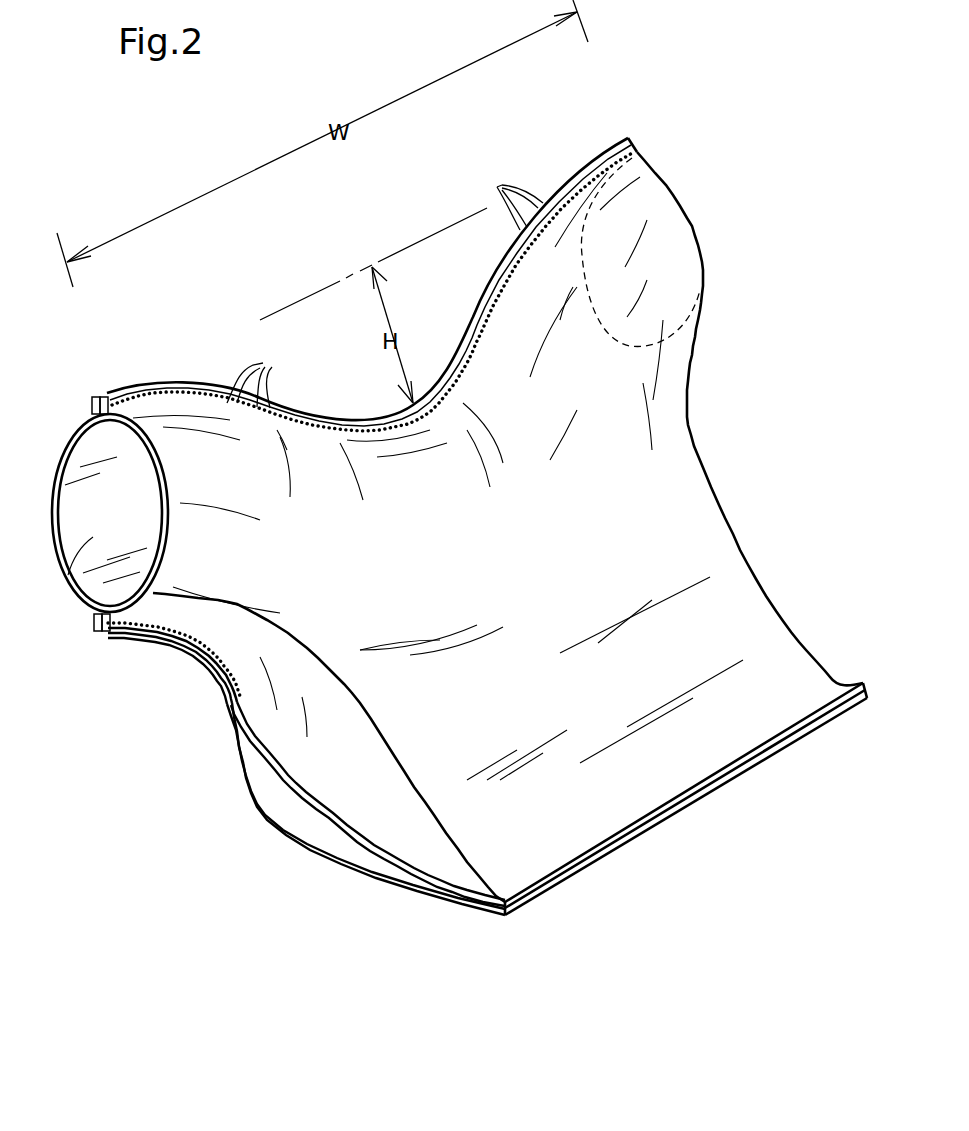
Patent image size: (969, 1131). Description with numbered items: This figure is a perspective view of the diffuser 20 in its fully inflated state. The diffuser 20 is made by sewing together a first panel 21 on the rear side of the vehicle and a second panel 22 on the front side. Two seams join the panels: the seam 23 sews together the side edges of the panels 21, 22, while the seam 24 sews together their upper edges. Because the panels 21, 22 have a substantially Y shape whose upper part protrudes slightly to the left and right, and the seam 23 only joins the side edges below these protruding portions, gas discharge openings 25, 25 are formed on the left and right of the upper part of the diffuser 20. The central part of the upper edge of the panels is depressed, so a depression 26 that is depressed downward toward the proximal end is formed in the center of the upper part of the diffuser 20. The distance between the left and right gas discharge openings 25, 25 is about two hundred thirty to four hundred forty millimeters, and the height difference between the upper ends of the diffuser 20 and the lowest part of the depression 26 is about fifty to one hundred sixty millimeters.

The diffuser 20 is at (568, 148).
The first panel 21 is at (248, 800).
The second panel 22 is at (563, 768).
The seam 23 is at (208, 637).
The seam 24 is at (385, 283).
The gas discharge opening 25 is at (660, 255).
The depression 26 is at (425, 400).